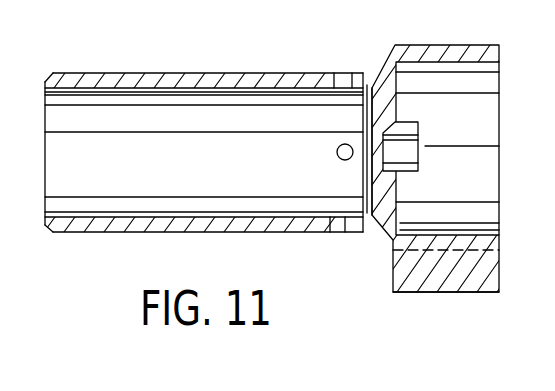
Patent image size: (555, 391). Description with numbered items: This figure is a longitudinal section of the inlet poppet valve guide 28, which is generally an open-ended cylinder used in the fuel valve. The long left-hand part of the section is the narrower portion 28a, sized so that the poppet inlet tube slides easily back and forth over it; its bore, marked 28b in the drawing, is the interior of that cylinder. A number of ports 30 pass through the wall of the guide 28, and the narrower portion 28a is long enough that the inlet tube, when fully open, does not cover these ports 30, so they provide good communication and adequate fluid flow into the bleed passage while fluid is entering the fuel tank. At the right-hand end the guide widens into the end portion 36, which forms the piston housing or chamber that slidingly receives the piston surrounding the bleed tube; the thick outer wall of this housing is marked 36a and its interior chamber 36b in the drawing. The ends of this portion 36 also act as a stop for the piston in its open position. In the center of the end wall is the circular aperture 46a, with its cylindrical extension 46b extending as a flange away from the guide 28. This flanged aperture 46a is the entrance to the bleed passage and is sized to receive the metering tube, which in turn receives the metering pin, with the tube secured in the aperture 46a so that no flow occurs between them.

The inlet poppet valve guide 28 is at (233, 66).
The narrower portion 28a is at (147, 232).
The tube bore 28b is at (180, 177).
The ports 30 is at (336, 153).
The end portion 36 is at (440, 45).
The fitting base 36a is at (445, 292).
The fitting cavity 36b is at (483, 125).
The circular aperture 46a is at (402, 153).
The cylindrical extension 46b is at (420, 168).